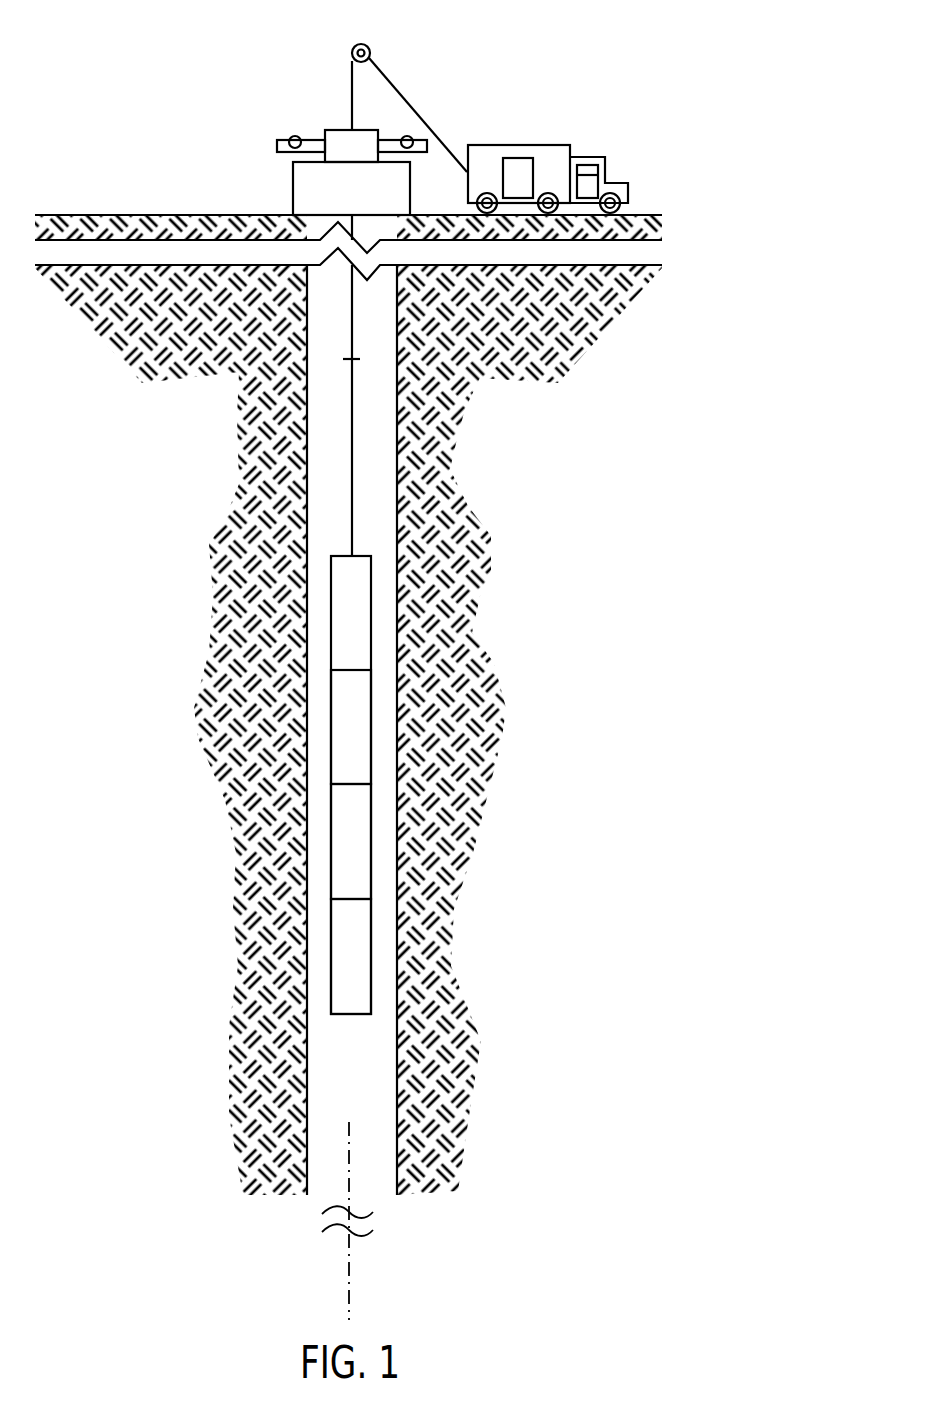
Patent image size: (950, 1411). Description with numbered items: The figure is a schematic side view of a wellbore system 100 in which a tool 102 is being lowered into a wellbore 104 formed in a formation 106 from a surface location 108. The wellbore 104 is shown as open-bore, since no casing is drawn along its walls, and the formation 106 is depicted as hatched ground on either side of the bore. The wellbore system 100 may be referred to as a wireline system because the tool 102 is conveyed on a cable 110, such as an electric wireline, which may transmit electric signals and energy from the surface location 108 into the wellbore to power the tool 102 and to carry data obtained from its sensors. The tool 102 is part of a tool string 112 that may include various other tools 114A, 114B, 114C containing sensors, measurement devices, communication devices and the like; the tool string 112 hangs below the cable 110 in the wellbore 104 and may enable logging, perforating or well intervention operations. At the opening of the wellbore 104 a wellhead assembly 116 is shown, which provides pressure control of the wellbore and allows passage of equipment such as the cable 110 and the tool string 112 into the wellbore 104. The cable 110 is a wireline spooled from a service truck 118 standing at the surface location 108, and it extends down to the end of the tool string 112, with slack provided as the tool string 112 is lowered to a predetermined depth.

The wellbore system 100 is at (480, 86).
The tool 102 is at (345, 612).
The wellbore 104 is at (270, 329).
The formation 106 is at (573, 470).
The surface location 108 is at (655, 214).
The cable 110 is at (419, 110).
The tool string 112 is at (521, 594).
The tool 114A is at (360, 733).
The tool 114B is at (360, 848).
The tool 114C is at (360, 963).
The wellhead assembly 116 is at (333, 116).
The service truck 118 is at (593, 130).